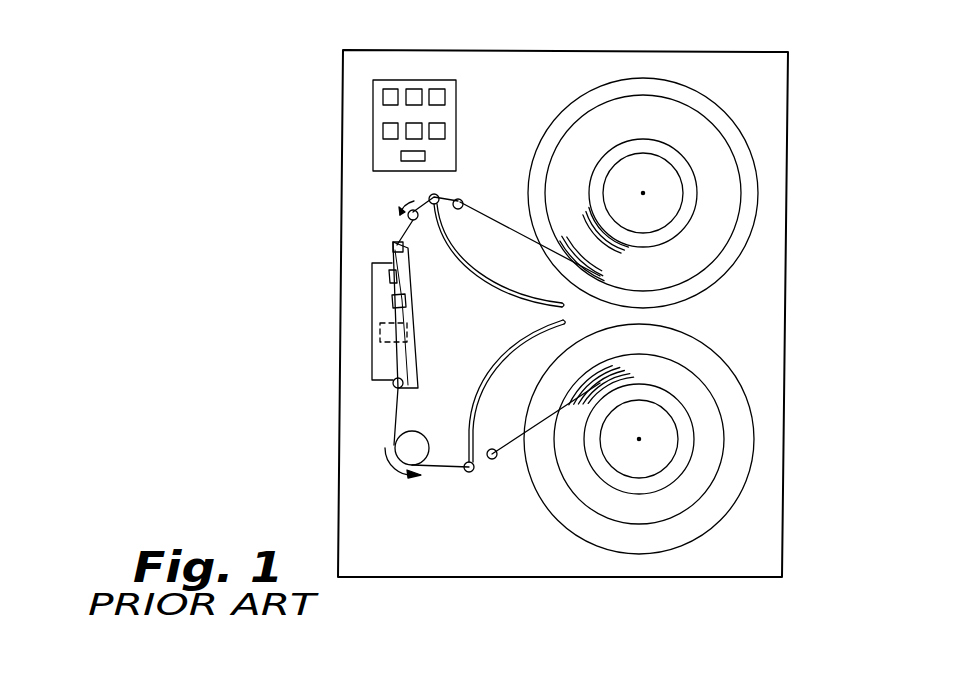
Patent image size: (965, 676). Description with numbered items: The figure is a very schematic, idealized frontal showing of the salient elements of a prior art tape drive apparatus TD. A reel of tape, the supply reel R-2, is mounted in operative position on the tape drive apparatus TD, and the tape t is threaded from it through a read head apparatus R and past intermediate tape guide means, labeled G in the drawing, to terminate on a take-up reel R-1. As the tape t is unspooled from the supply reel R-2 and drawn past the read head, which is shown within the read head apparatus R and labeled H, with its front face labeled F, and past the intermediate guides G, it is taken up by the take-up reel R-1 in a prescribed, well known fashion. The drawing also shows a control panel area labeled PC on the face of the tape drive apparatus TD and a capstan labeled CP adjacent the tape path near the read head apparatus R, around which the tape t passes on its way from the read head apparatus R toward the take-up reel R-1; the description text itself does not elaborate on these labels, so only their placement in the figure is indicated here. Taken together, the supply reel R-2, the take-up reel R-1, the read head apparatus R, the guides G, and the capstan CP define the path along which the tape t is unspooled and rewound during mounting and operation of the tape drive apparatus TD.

The tape drive apparatus TD is at (860, 137).
The control panel PC is at (456, 106).
The supply reel R-2 is at (735, 263).
The take-up reel R-1 is at (745, 487).
The tape t is at (492, 212).
The tape guide post G is at (393, 243).
The read head apparatus R is at (360, 319).
The magnetic head H is at (370, 338).
The front face of head F is at (410, 335).
The capstan CP is at (443, 420).